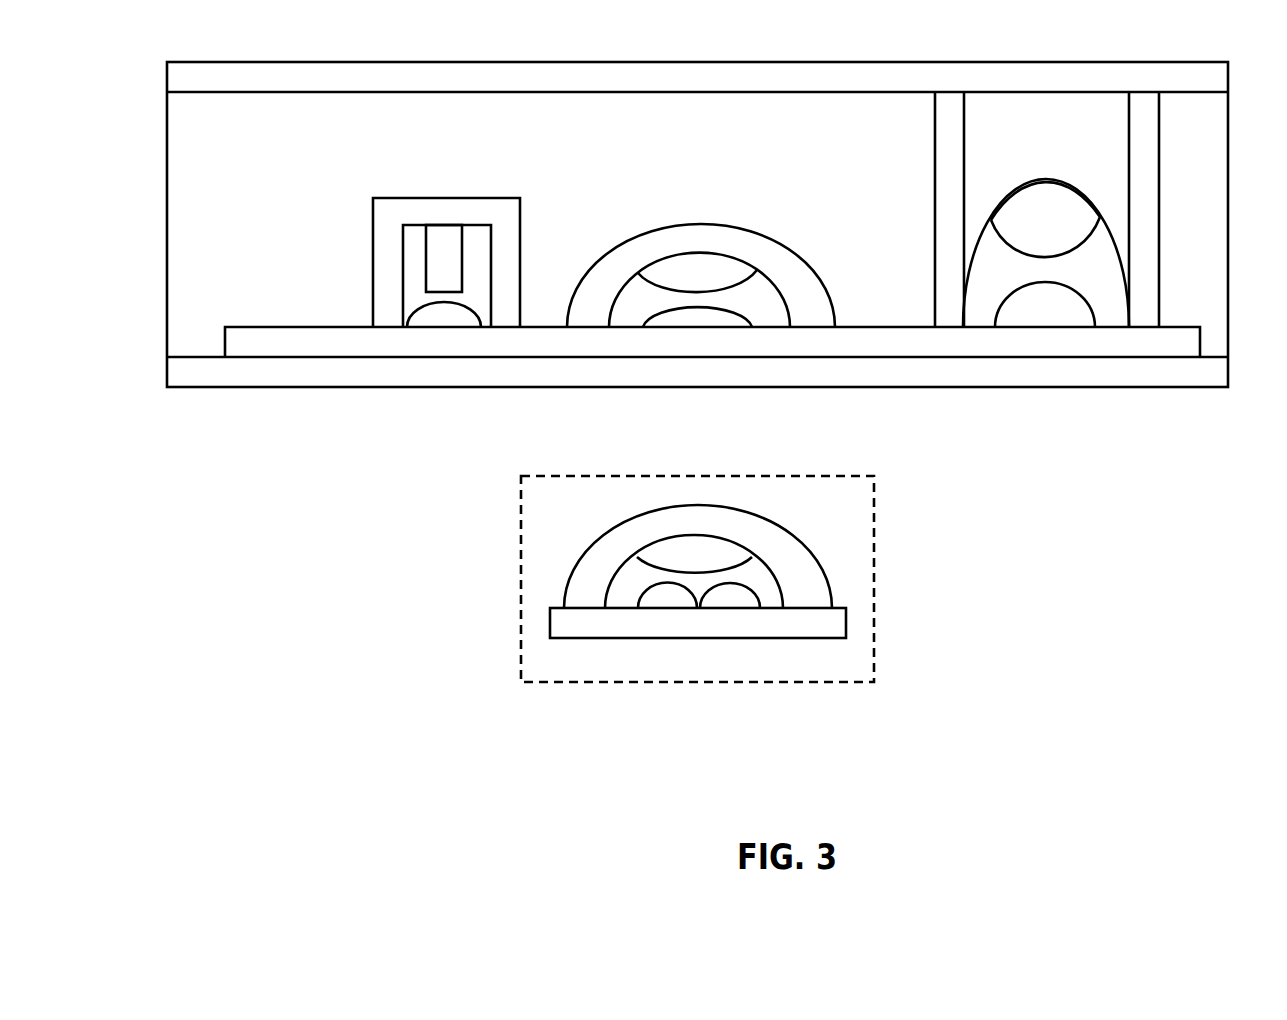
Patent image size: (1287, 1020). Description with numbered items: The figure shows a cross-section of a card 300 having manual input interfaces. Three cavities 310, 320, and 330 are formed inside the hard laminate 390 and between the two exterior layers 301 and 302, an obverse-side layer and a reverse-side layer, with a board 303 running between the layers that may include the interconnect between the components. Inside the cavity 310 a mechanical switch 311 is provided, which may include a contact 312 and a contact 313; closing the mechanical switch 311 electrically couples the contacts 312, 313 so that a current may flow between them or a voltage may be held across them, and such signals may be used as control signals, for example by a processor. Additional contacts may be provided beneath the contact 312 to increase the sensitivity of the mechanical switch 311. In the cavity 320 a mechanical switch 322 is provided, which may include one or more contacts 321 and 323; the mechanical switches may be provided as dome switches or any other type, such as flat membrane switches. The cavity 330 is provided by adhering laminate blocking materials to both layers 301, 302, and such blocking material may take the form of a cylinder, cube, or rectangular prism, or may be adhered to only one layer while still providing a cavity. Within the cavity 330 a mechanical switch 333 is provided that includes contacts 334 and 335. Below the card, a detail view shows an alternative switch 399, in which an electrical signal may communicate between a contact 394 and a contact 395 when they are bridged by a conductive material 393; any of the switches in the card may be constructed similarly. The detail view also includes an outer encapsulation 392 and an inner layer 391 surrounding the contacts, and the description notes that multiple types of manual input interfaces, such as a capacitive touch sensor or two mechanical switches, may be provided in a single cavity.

The card 300 is at (1243, 392).
The layer 301 is at (414, 388).
The layer 302 is at (474, 92).
The board 303 is at (266, 327).
The cavity 310 is at (384, 212).
The mechanical switch 311 is at (474, 225).
The contact 312 is at (431, 269).
The contact 313 is at (410, 323).
The cavity 320 is at (639, 253).
The contact 321 is at (652, 276).
The mechanical switch 322 is at (711, 254).
The contact 323 is at (670, 311).
The cavity 330 is at (1014, 140).
The mechanical switch 333 is at (1038, 180).
The contact 334 is at (1092, 240).
The contact 335 is at (1040, 283).
The hard laminate 390 is at (237, 152).
The inner layer 391 is at (620, 580).
The outer encapsulation 392 is at (636, 536).
The conductive material 393 is at (708, 574).
The contact 394 is at (663, 596).
The contact 395 is at (757, 600).
The switch 399 is at (522, 498).